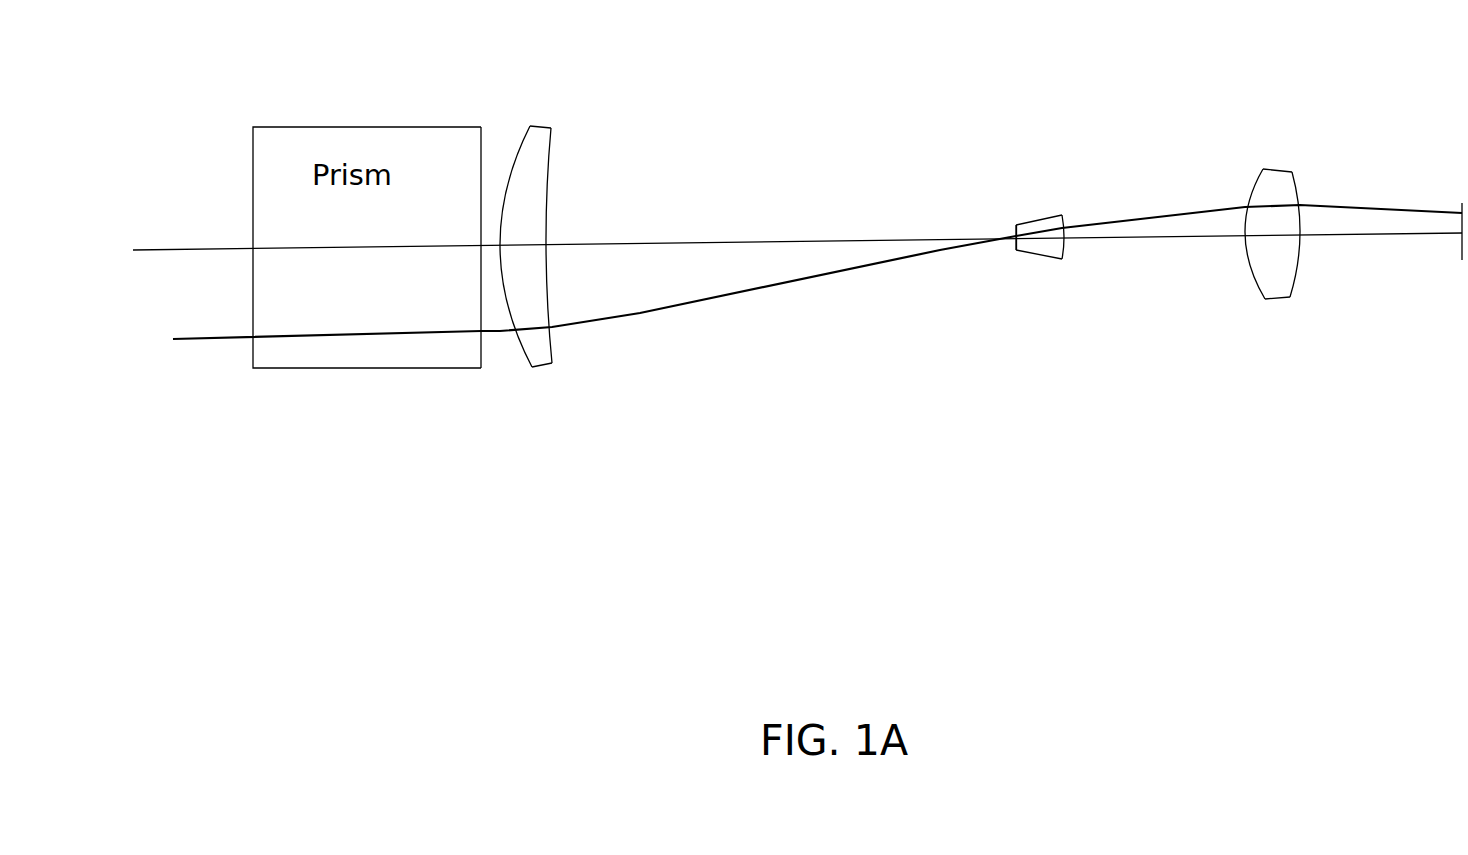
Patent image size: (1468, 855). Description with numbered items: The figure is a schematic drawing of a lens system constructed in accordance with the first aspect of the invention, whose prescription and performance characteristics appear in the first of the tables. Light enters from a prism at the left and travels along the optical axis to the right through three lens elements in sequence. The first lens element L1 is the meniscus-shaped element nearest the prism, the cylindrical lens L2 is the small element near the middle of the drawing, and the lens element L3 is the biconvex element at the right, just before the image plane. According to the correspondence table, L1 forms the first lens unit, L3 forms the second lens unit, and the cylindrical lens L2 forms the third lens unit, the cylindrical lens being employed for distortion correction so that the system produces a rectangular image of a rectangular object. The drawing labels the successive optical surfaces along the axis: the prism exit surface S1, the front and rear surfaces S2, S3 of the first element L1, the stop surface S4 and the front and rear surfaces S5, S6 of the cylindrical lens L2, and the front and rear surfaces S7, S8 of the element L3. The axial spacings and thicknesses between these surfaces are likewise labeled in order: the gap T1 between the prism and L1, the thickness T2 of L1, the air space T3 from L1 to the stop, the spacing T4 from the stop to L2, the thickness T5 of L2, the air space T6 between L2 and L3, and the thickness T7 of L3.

The lens element L1 is at (576, 248).
The cylindrical lens L2 is at (1052, 224).
The lens element L3 is at (1296, 225).
The prism exit surface S1 is at (488, 313).
The first lens front surface S2 is at (518, 347).
The first lens rear surface S3 is at (550, 348).
The aperture stop surface S4 is at (1012, 240).
The second lens front surface S5 is at (1018, 250).
The second lens rear surface S6 is at (1062, 255).
The third lens front surface S7 is at (1245, 255).
The third lens rear surface S8 is at (1303, 260).
The air gap between prism and first lens T1 is at (497, 245).
The first lens thickness T2 is at (533, 247).
The air gap between first and second lens T3 is at (777, 243).
The stop to second lens spacing T4 is at (1012, 237).
The second lens thickness T5 is at (1063, 232).
The air gap between second and third lens T6 is at (1178, 235).
The third lens thickness T7 is at (1270, 235).